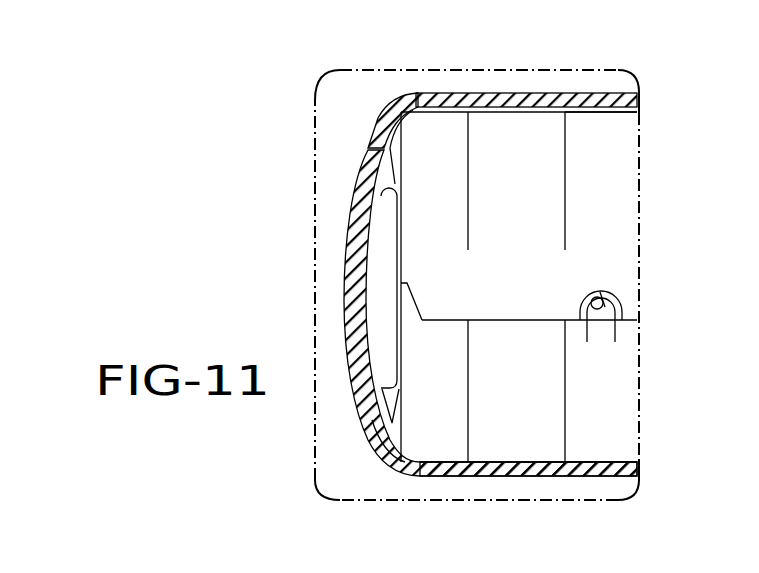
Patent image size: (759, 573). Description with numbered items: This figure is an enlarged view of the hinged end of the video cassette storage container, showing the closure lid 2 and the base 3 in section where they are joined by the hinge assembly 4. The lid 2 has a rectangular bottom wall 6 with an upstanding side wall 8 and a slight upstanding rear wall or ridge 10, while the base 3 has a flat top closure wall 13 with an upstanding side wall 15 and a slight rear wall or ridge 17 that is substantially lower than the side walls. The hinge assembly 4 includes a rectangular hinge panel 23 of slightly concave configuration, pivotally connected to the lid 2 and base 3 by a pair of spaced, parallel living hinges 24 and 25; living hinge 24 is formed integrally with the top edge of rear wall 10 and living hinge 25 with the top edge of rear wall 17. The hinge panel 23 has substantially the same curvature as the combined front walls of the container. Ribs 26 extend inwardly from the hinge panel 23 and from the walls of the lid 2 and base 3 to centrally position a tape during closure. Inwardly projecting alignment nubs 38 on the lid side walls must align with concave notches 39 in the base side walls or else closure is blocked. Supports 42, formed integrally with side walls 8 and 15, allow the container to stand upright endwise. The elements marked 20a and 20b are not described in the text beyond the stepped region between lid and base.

The closure lid 2 is at (605, 430).
The base 3 is at (608, 163).
The hinge assembly 4 is at (356, 182).
The bottom wall 6 is at (497, 462).
The side wall 8 is at (604, 357).
The rear wall 10 is at (385, 452).
The top closure wall 13 is at (568, 96).
The side wall 15 is at (600, 222).
The rear wall 17 is at (376, 123).
The shelf 20a is at (412, 318).
The shelf step 20b is at (403, 297).
The hinge panel 23 is at (347, 228).
The living hinge 24 is at (380, 420).
The living hinge 25 is at (370, 150).
The ribs 26 is at (388, 217).
The alignment nubs 38 is at (620, 305).
The notches 39 is at (583, 307).
The supports 42 is at (513, 143).